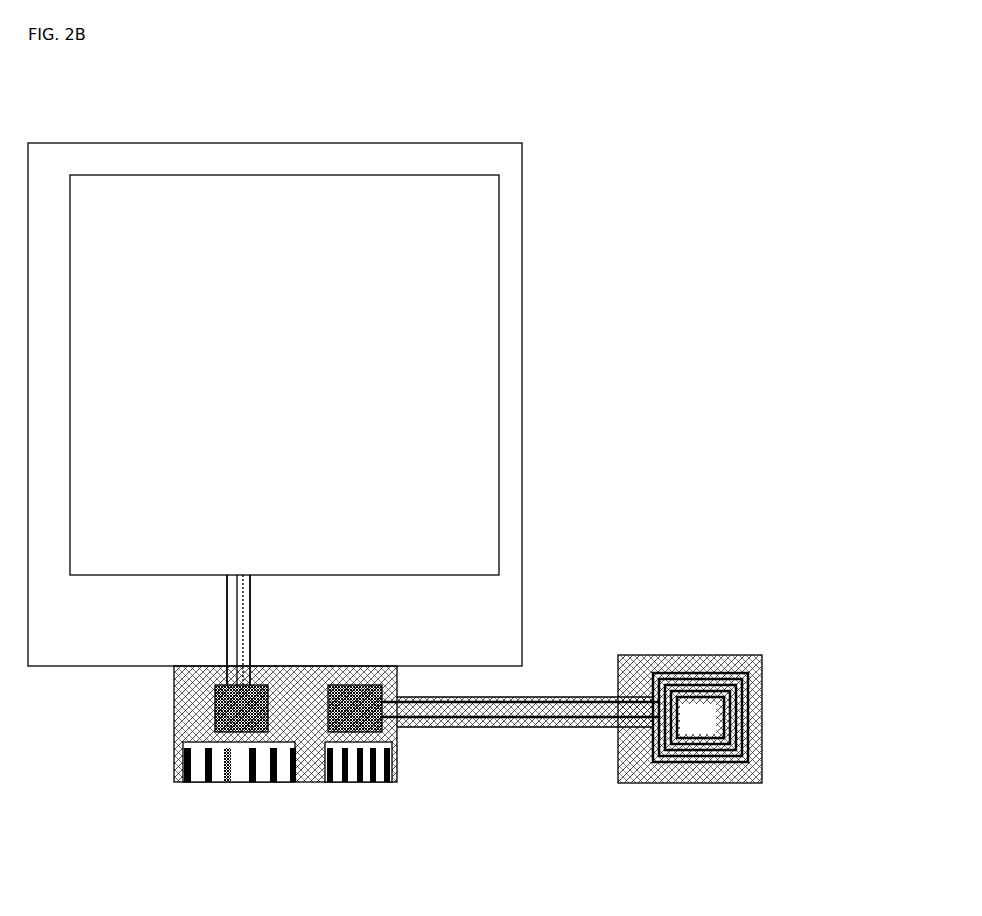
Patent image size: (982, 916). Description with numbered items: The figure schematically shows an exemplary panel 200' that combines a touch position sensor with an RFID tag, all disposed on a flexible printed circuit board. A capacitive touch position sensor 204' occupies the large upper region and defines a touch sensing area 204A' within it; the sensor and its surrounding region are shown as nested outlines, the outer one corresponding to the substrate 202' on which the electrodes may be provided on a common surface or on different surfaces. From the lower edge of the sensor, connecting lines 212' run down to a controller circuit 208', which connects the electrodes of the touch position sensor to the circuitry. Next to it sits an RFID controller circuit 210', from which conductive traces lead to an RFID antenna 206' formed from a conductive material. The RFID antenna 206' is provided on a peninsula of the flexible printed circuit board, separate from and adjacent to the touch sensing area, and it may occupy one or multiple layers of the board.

The panel 200' is at (395, 463).
The substrate 202' is at (354, 404).
The capacitive touch position sensor 204' is at (383, 375).
The touch sensing area 204A' is at (395, 375).
The RFID antenna 206' is at (689, 691).
The controller circuit 208' is at (242, 724).
The RFID controller circuit 210' is at (485, 693).
The connecting lines 212' is at (176, 630).